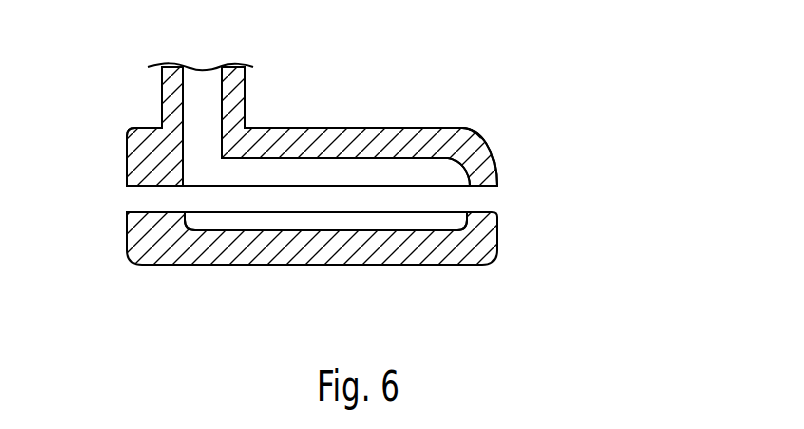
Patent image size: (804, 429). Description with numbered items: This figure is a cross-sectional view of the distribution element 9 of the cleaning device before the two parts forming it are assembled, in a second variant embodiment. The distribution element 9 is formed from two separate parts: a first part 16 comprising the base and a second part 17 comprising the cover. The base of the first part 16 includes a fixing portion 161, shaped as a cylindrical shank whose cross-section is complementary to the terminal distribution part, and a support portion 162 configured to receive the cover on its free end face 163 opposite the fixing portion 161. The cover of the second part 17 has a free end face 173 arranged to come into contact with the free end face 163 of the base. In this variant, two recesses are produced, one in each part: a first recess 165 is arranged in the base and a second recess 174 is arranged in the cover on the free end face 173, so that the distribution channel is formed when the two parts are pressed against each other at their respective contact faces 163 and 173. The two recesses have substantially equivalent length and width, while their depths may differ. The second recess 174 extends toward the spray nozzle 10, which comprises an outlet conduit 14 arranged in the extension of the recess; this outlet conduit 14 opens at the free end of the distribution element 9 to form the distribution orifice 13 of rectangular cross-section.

The distribution element 9 is at (608, 170).
The spray nozzle 10 is at (473, 121).
The distribution orifice 13 is at (493, 130).
The outlet conduit 14 is at (457, 158).
The first part 16 is at (138, 106).
The second part 17 is at (137, 278).
The fixing portion 161 is at (243, 95).
The support portion 162 is at (125, 158).
The free end face 163 is at (140, 197).
The first recess 165 is at (299, 181).
The free end face 173 is at (496, 196).
The second recess 174 is at (347, 231).